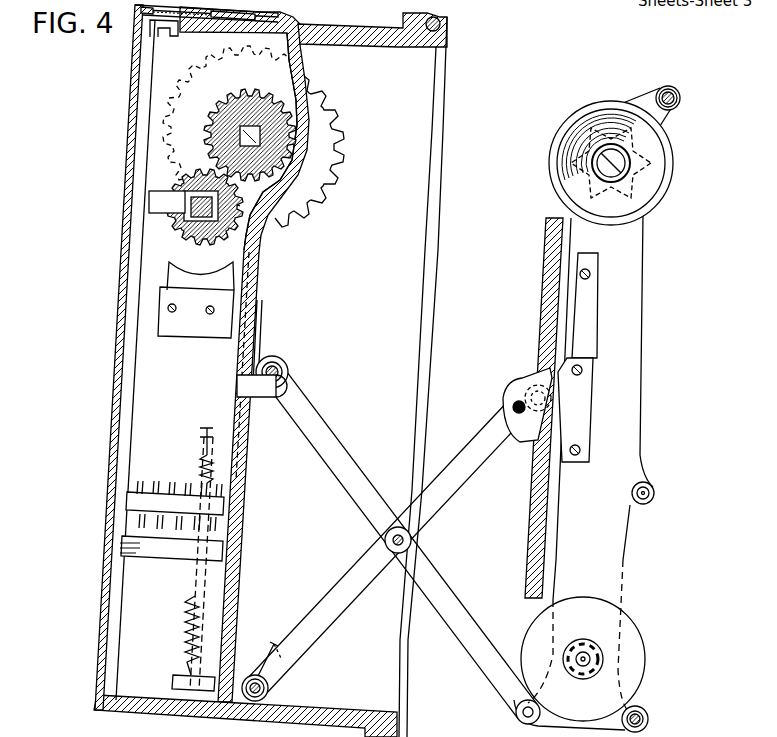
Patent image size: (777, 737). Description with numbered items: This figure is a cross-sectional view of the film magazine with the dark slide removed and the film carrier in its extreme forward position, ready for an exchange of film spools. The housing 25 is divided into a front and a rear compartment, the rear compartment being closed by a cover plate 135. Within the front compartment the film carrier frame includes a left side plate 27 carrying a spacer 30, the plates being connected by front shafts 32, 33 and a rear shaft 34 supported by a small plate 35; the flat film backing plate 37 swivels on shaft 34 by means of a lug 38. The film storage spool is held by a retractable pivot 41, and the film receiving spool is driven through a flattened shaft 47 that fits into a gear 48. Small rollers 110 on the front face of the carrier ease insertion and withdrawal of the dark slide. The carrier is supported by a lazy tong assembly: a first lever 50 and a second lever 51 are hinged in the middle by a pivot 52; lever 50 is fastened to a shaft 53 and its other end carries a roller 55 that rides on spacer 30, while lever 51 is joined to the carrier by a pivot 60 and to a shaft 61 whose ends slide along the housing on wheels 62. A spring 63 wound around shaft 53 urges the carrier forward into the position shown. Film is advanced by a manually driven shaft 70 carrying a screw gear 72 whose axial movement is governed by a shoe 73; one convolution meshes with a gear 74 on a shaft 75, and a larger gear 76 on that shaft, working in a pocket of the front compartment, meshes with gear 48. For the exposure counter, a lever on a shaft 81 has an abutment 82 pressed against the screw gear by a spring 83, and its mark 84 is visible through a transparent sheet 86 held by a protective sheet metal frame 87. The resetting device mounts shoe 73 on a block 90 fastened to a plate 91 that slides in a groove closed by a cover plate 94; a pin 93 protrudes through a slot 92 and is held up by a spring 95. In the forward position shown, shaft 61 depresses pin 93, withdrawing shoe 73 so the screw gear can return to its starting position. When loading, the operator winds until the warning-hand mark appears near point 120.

The housing 25 is at (383, 46).
The left side plate 27 is at (643, 280).
The spacer 30 is at (595, 268).
The shaft 32 is at (681, 100).
The shaft 33 is at (648, 712).
The shaft 34 is at (517, 400).
The small plate 35 is at (583, 398).
The film backing plate 37 is at (550, 303).
The lug 38 is at (503, 397).
The retractable pivot 41 is at (596, 650).
The flattened shaft 47 is at (630, 177).
The gear 48 is at (672, 153).
The first lever 50 is at (331, 598).
The second lever 51 is at (322, 425).
The pivot 52 is at (385, 540).
The shaft 53 is at (268, 700).
The roller 55 is at (537, 377).
The pivot 60 is at (513, 710).
The shaft 61 is at (283, 368).
The wheel 62 is at (279, 351).
The spring 63 is at (267, 680).
The manually driven shaft 70 is at (200, 172).
The screw gear 72 is at (190, 226).
The shoe 73 is at (173, 268).
The gear 74 is at (270, 90).
The shaft 75 is at (232, 100).
The gear 76 is at (325, 93).
The shaft 81 is at (145, 495).
The abutment 82 is at (149, 190).
The spring 83 is at (173, 483).
The mark 84 is at (150, 34).
The transparent sheet 86 is at (210, 20).
The protective sheet metal frame 87 is at (318, 40).
The block 90 is at (172, 328).
The plate 91 is at (240, 293).
The slot 92 is at (262, 337).
The pin 93 is at (265, 400).
The cover plate 94 is at (237, 379).
The spring 95 is at (187, 623).
The roller 110 is at (654, 486).
The point 120 is at (645, 660).
The cover plate 135 is at (103, 618).